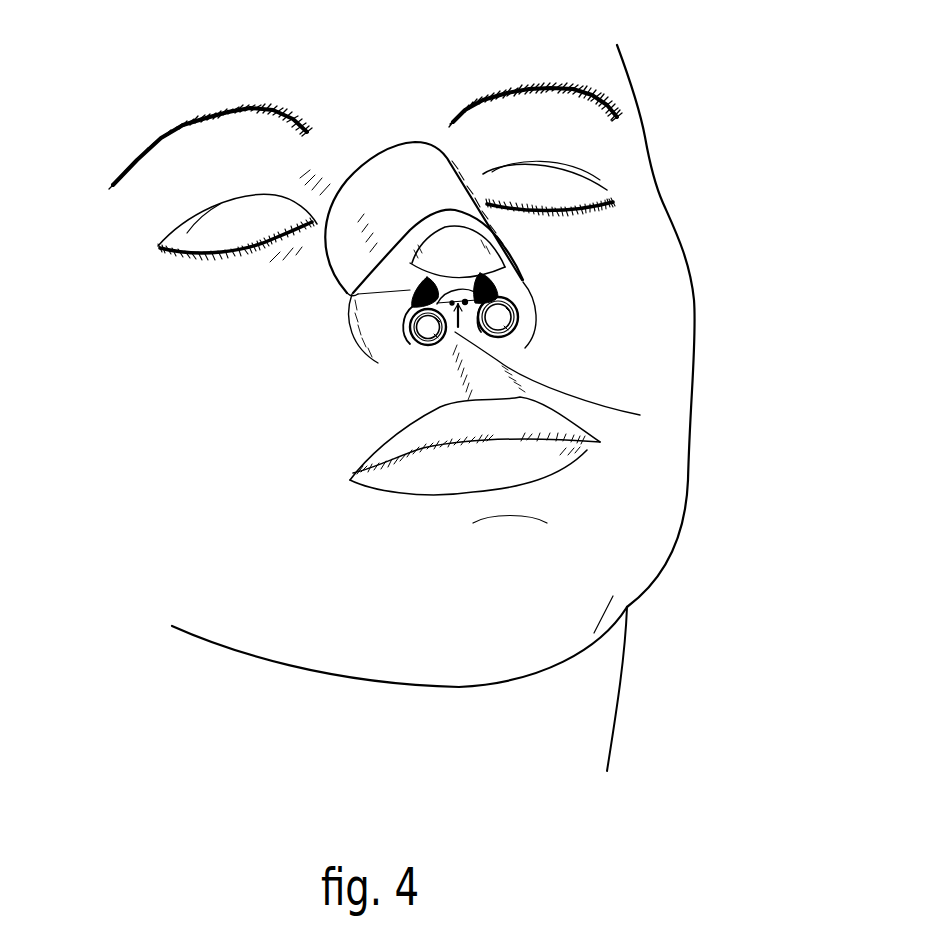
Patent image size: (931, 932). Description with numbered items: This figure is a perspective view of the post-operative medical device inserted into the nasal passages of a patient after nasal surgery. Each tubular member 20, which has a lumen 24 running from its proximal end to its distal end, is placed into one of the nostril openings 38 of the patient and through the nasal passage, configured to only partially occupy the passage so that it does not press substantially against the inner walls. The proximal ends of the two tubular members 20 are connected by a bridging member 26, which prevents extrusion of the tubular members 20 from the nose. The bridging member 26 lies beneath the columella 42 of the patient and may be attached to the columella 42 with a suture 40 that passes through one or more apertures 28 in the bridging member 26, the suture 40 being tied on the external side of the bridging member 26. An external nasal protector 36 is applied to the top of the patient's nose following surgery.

The tubular member 20 is at (520, 335).
The lumen 24 is at (520, 314).
The bridging member 26 is at (640, 415).
The aperture 28 is at (515, 300).
The external nasal protector 36 is at (412, 172).
The nostril opening 38 is at (505, 282).
The suture 40 is at (457, 327).
The columella 42 is at (453, 270).